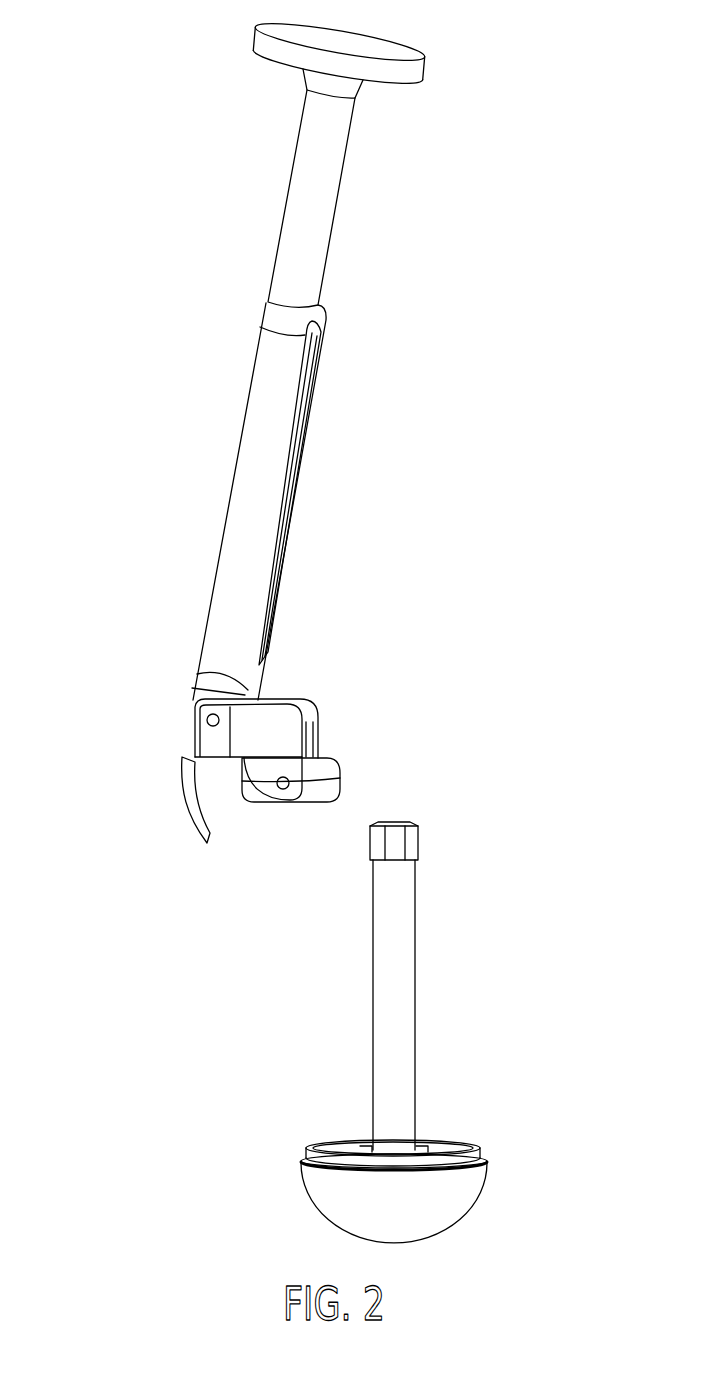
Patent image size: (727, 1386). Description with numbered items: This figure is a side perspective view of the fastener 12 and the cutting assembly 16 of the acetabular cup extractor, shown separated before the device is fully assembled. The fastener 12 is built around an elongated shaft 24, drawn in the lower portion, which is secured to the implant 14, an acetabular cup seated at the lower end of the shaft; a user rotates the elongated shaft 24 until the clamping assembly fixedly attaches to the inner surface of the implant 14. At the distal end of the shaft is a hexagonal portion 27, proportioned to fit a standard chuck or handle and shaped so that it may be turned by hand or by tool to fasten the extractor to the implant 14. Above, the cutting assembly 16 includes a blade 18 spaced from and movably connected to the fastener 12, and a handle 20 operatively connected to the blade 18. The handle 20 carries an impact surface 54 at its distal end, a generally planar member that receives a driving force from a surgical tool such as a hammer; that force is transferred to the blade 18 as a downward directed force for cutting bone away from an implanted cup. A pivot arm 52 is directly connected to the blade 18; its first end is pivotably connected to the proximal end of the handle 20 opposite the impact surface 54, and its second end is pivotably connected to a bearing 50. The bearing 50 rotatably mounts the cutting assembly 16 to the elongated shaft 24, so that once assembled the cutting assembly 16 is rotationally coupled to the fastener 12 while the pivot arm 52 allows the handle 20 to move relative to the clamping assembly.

The fastener 12 is at (500, 822).
The implant 14 is at (477, 1197).
The cutting assembly 16 is at (168, 17).
The blade 18 is at (197, 807).
The handle 20 is at (333, 222).
The elongated shaft 24 is at (373, 1030).
The hexagonal portion 27 is at (400, 822).
The bearing 50 is at (340, 760).
The pivot arm 52 is at (323, 723).
The impact surface 54 is at (390, 35).